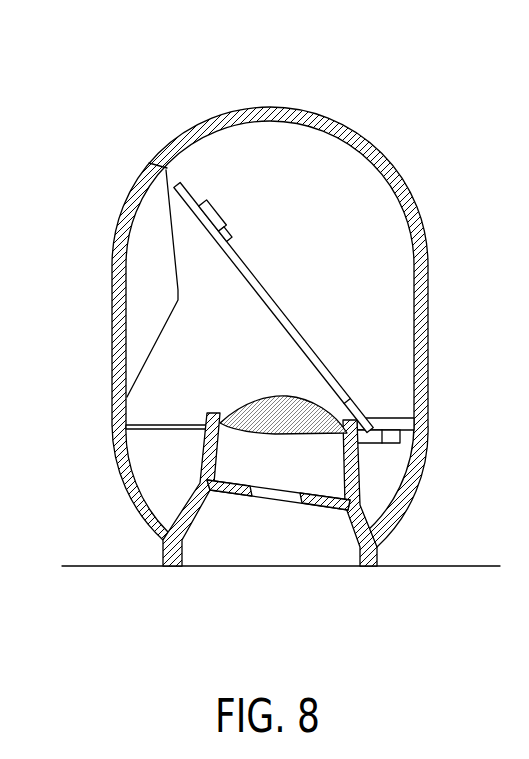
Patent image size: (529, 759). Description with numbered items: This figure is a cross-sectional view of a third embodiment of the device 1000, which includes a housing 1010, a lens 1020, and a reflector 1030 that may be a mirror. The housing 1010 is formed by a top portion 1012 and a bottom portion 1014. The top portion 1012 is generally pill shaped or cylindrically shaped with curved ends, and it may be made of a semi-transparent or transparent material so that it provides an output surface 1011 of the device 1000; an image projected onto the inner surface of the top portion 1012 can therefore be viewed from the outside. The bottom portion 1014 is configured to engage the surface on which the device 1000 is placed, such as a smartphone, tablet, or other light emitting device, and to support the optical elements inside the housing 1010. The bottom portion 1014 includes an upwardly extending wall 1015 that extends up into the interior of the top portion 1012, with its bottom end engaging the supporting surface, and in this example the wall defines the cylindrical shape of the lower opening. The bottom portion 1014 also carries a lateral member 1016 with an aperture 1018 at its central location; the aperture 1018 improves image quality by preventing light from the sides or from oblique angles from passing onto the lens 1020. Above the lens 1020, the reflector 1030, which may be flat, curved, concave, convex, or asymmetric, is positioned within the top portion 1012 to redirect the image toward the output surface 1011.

The device 1000 is at (112, 105).
The housing 1010 is at (241, 327).
The output surface 1011 is at (113, 322).
The top portion 1012 is at (390, 167).
The bottom portion 1014 is at (360, 490).
The upwardly extending wall 1015 is at (363, 537).
The lateral member 1016 is at (237, 493).
The aperture 1018 is at (278, 505).
The lens 1020 is at (285, 422).
The reflector 1030 is at (267, 282).